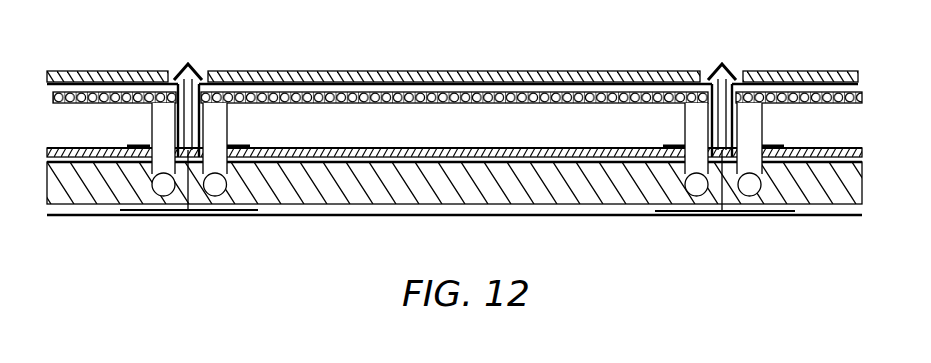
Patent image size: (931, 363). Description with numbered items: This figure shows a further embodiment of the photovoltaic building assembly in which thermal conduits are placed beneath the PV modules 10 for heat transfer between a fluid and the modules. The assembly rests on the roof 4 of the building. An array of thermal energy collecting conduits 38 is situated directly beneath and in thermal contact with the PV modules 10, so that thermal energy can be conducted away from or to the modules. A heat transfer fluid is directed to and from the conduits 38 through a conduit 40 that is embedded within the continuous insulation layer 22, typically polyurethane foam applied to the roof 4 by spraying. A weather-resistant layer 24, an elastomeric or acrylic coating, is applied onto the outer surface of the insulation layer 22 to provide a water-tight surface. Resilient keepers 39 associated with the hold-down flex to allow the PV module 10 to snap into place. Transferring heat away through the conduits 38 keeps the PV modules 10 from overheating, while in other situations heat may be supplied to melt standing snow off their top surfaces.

The roof 4 is at (498, 217).
The PV module 10 is at (480, 72).
The insulation layer 22 is at (570, 192).
The weather-resistant layer 24 is at (856, 134).
The thermal energy collecting conduits 38 is at (797, 106).
The resilient keepers 39 is at (187, 64).
The conduit 40 is at (214, 186).